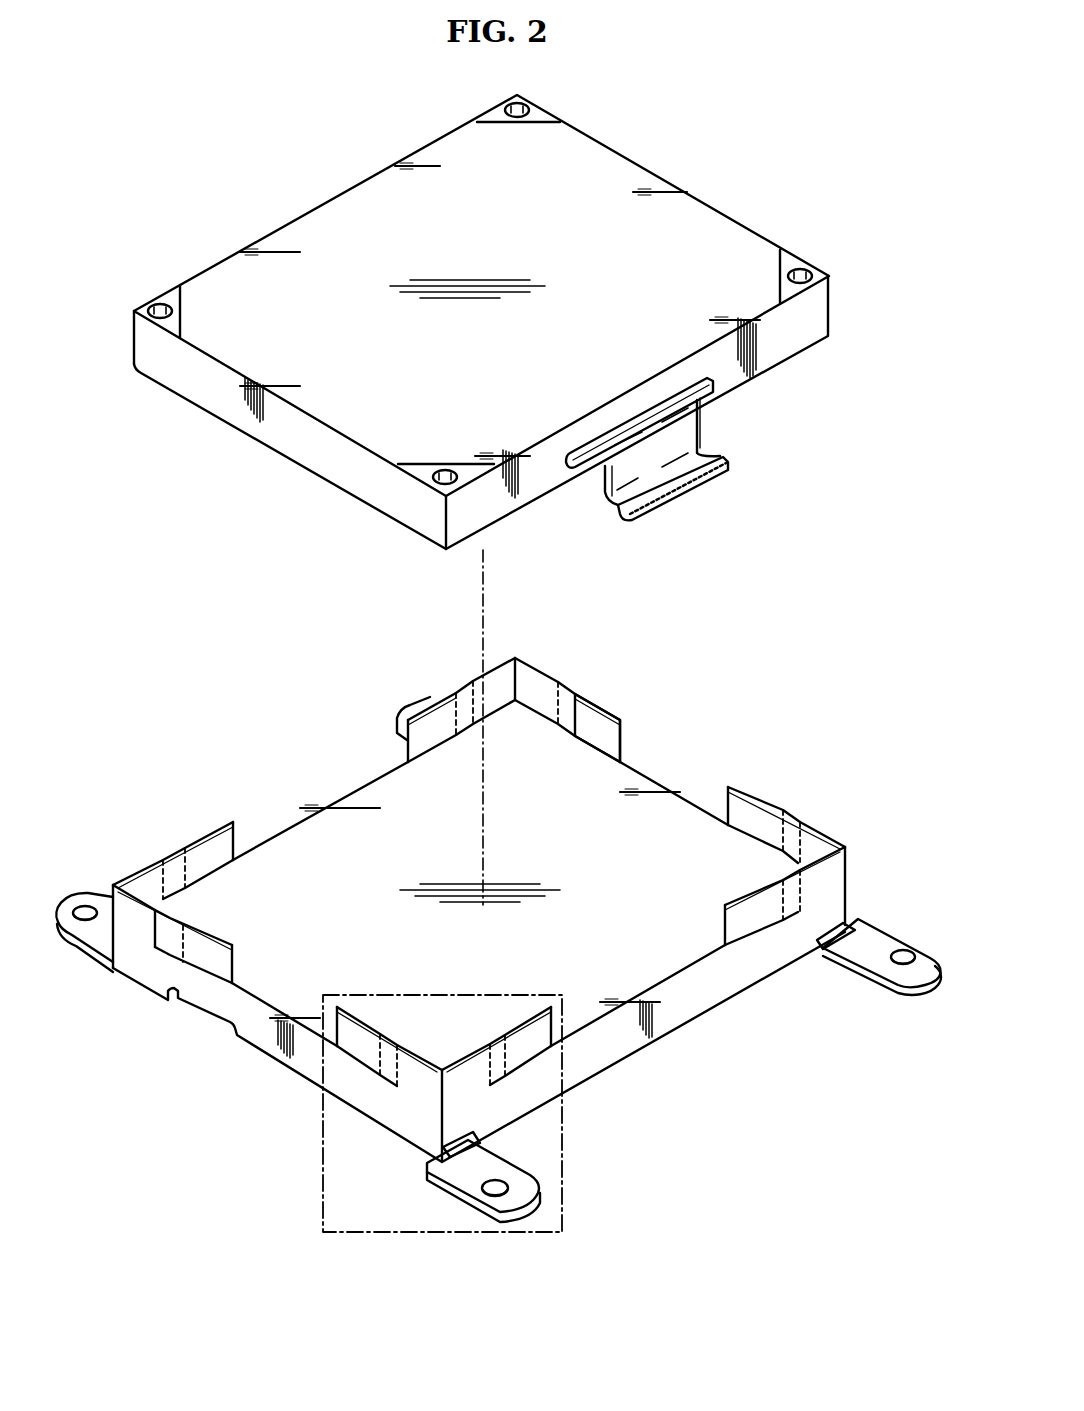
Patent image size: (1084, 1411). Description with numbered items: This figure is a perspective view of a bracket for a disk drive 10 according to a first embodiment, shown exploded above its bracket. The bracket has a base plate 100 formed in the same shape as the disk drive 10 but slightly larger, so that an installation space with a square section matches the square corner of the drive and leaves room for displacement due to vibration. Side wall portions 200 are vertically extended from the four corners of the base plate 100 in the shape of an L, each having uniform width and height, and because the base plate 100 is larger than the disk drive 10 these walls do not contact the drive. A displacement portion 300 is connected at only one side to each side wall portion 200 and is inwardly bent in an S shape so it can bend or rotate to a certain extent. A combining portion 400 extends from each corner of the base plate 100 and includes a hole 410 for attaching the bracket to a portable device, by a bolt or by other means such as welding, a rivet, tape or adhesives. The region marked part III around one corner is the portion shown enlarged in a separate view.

The disk drive 10 is at (318, 212).
The base plate 100 is at (667, 830).
The side wall portion 200 is at (537, 680).
The displacement portion 300 is at (595, 724).
The combining portion 400 is at (508, 1172).
The hole 410 is at (483, 1178).
The part III is at (322, 1208).